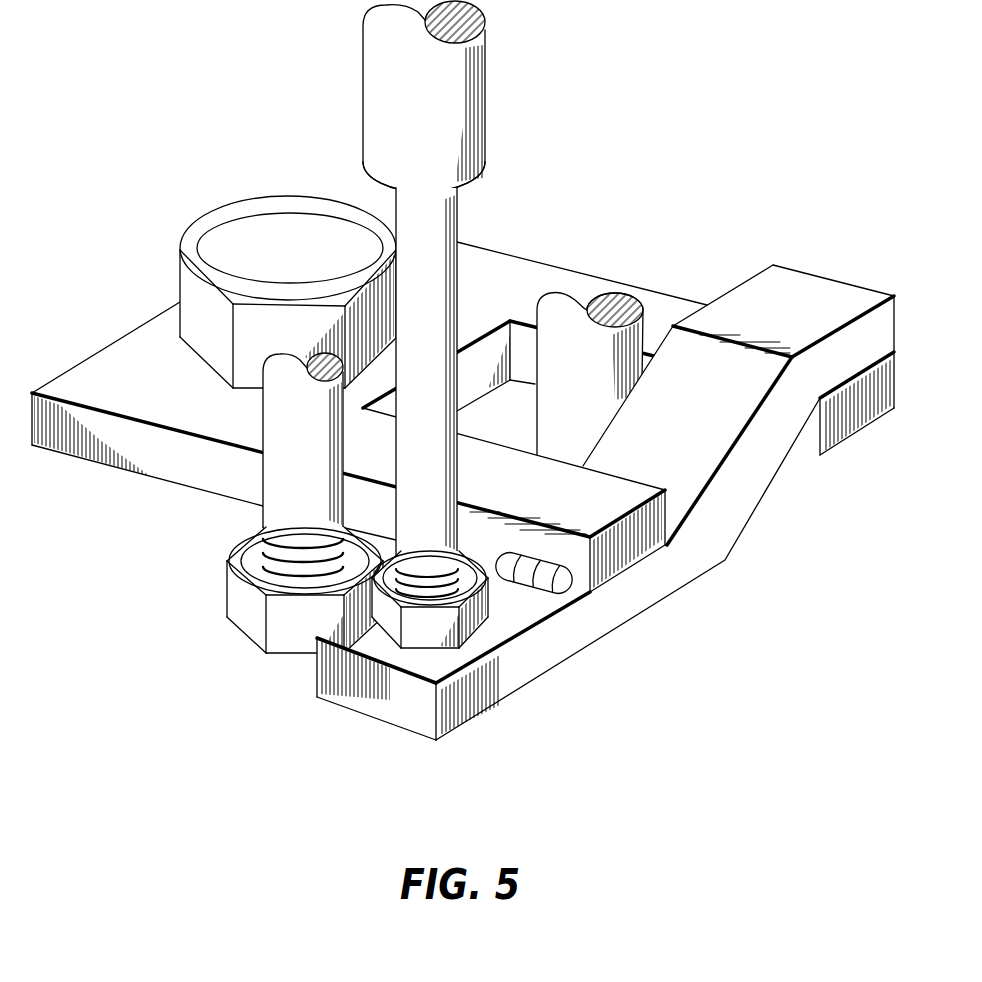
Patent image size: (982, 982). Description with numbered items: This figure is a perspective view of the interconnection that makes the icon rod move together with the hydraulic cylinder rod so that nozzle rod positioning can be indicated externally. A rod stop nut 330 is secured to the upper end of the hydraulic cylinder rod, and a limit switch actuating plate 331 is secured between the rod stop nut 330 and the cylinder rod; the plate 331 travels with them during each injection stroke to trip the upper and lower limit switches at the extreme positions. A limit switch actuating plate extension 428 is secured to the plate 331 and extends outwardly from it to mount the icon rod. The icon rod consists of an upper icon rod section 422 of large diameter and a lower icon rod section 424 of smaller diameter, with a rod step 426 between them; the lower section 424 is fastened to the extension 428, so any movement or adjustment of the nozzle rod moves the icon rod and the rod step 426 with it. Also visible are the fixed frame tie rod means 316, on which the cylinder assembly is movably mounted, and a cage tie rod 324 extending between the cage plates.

The fixed frame tie rod means 316 is at (609, 384).
The cage tie rod 324 is at (325, 442).
The rod stop nut 330 is at (222, 235).
The limit switch actuating plate 331 is at (545, 499).
The upper icon rod section 422 is at (445, 111).
The lower icon rod section 424 is at (445, 340).
The rod step 426 is at (378, 191).
The limit switch actuating plate extension 428 is at (804, 325).